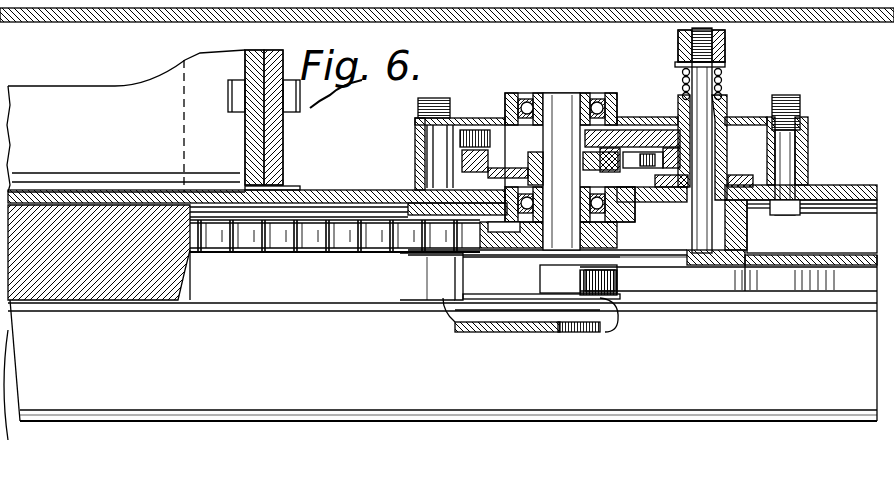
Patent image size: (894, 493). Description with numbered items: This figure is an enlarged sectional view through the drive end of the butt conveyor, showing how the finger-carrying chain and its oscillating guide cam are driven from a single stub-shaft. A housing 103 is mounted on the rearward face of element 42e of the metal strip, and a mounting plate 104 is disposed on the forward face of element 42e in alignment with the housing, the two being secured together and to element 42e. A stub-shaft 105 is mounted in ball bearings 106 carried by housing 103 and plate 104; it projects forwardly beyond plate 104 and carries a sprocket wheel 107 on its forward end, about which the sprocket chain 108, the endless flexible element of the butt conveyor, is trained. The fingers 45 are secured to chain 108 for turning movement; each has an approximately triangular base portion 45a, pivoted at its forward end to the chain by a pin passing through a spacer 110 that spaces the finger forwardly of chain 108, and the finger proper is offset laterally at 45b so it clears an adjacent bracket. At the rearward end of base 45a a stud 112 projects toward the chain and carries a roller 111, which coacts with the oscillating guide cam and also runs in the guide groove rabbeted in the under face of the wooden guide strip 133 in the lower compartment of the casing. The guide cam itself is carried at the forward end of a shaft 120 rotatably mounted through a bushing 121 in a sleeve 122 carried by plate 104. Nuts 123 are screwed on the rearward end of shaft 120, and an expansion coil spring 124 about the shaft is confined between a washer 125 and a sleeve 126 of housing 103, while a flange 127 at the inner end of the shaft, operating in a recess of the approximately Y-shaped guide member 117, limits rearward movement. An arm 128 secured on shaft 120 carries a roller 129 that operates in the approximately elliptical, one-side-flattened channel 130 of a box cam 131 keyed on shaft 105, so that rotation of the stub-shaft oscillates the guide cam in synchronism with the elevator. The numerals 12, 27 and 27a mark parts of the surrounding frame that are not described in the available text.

The clamp block 12 is at (245, 65).
The frame rail 27 is at (75, 410).
The frame rail flange 27a is at (158, 410).
The element of strip 42e is at (839, 190).
The finger 45 is at (548, 332).
The base portion 45a is at (454, 313).
The lateral offset 45b is at (578, 334).
The housing 103 is at (461, 117).
The mounting plate 104 is at (405, 214).
The stub-shaft 105 is at (556, 240).
The ball bearings 106 is at (546, 77).
The sprocket wheel 107 is at (483, 238).
The sprocket chain 108 is at (245, 252).
The spacer 110 is at (426, 273).
The roller 111 is at (618, 272).
The stud 112 is at (652, 270).
The guide member 117 is at (746, 292).
The shaft 120 is at (728, 281).
The bushing 121 is at (735, 175).
The sleeve 122 is at (776, 237).
The nuts 123 is at (724, 42).
The expansion coil spring 124 is at (724, 82).
The washer 125 is at (742, 64).
The sleeve 126 is at (729, 106).
The flange 127 is at (745, 265).
The arm 128 is at (632, 138).
The roller 129 is at (603, 118).
The channel 130 is at (490, 148).
The box cam 131 is at (465, 163).
The guide strip 133 is at (60, 303).